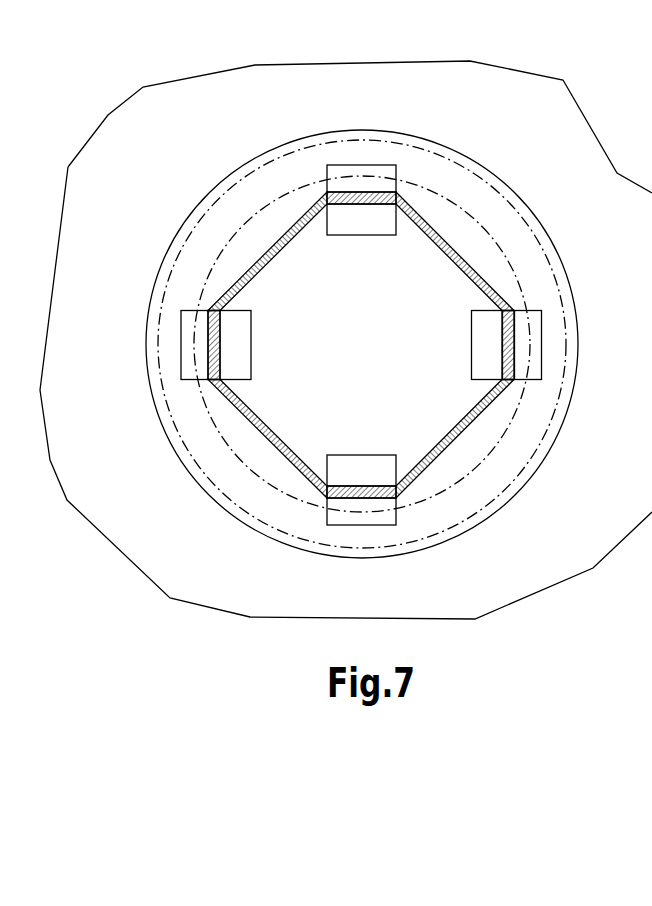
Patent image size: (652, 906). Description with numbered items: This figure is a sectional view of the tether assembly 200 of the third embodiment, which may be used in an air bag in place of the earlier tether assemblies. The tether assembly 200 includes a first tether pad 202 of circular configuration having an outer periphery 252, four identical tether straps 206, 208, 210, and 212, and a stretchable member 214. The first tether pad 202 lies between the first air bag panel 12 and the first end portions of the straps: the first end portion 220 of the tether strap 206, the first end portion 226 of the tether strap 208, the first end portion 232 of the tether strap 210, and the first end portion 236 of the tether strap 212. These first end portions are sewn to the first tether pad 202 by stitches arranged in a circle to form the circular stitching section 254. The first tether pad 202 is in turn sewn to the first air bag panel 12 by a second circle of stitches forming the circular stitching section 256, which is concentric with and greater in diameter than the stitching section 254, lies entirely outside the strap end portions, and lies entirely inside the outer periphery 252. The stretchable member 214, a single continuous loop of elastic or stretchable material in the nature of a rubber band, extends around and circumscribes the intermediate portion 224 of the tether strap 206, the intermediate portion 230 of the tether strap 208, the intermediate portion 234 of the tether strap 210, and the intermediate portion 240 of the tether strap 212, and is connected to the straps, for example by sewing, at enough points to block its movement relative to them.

The first air bag panel 12 is at (210, 83).
The tether assembly 200 is at (483, 140).
The first tether pad 202 is at (522, 179).
The outer periphery 252 is at (557, 240).
The circular stitching section 256 is at (177, 252).
The circular stitching section 254 is at (257, 212).
The stretchable member 214 is at (243, 433).
The tether strap 210 is at (383, 155).
The intermediate portion 234 is at (343, 165).
The first end portion 232 is at (367, 237).
The tether strap 212 is at (168, 331).
The first end portion 236 is at (252, 327).
The intermediate portion 240 is at (178, 357).
The first end portion 226 is at (472, 336).
The intermediate portion 230 is at (503, 352).
The tether strap 208 is at (556, 372).
The first end portion 220 is at (347, 455).
The intermediate portion 224 is at (370, 483).
The tether strap 206 is at (320, 532).